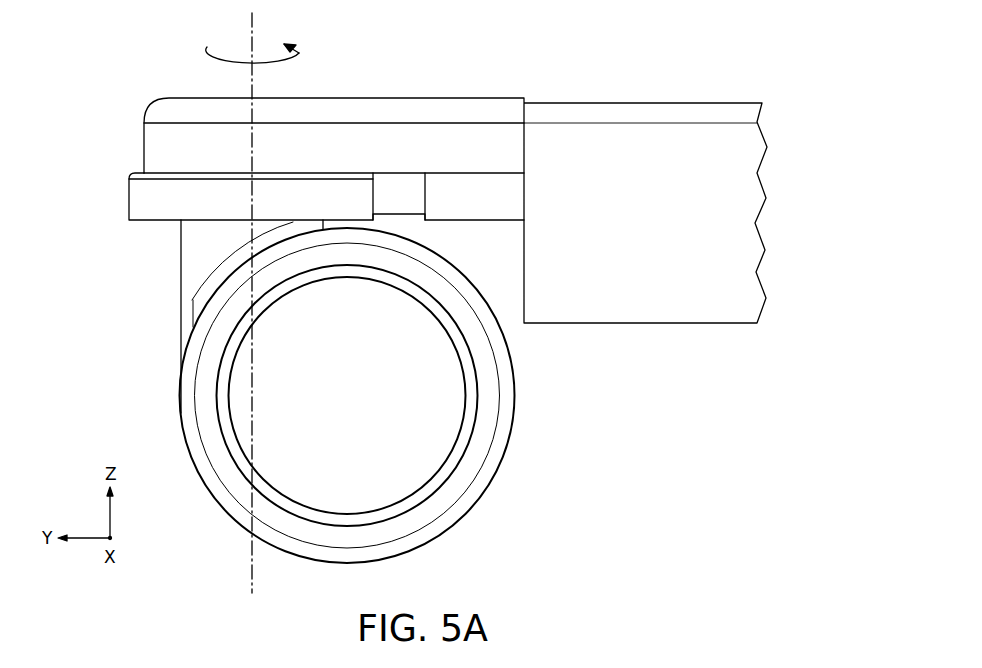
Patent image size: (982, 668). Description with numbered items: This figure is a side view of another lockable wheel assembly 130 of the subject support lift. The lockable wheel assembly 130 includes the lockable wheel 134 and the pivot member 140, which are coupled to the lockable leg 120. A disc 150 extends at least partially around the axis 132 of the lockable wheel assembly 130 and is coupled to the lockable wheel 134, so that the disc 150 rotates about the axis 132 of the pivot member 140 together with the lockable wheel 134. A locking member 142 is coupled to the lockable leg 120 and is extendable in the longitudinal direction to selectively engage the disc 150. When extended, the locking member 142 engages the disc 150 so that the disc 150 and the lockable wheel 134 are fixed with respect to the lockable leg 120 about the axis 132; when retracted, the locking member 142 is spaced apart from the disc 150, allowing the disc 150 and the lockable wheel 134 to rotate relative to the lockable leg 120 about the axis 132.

The lockable leg 120 is at (467, 130).
The lockable wheel assembly 130 is at (290, 391).
The axis 132 is at (252, 38).
The lockable wheel 134 is at (452, 507).
The pivot member 140 is at (188, 257).
The locking member 142 is at (475, 221).
The disc 150 is at (136, 190).